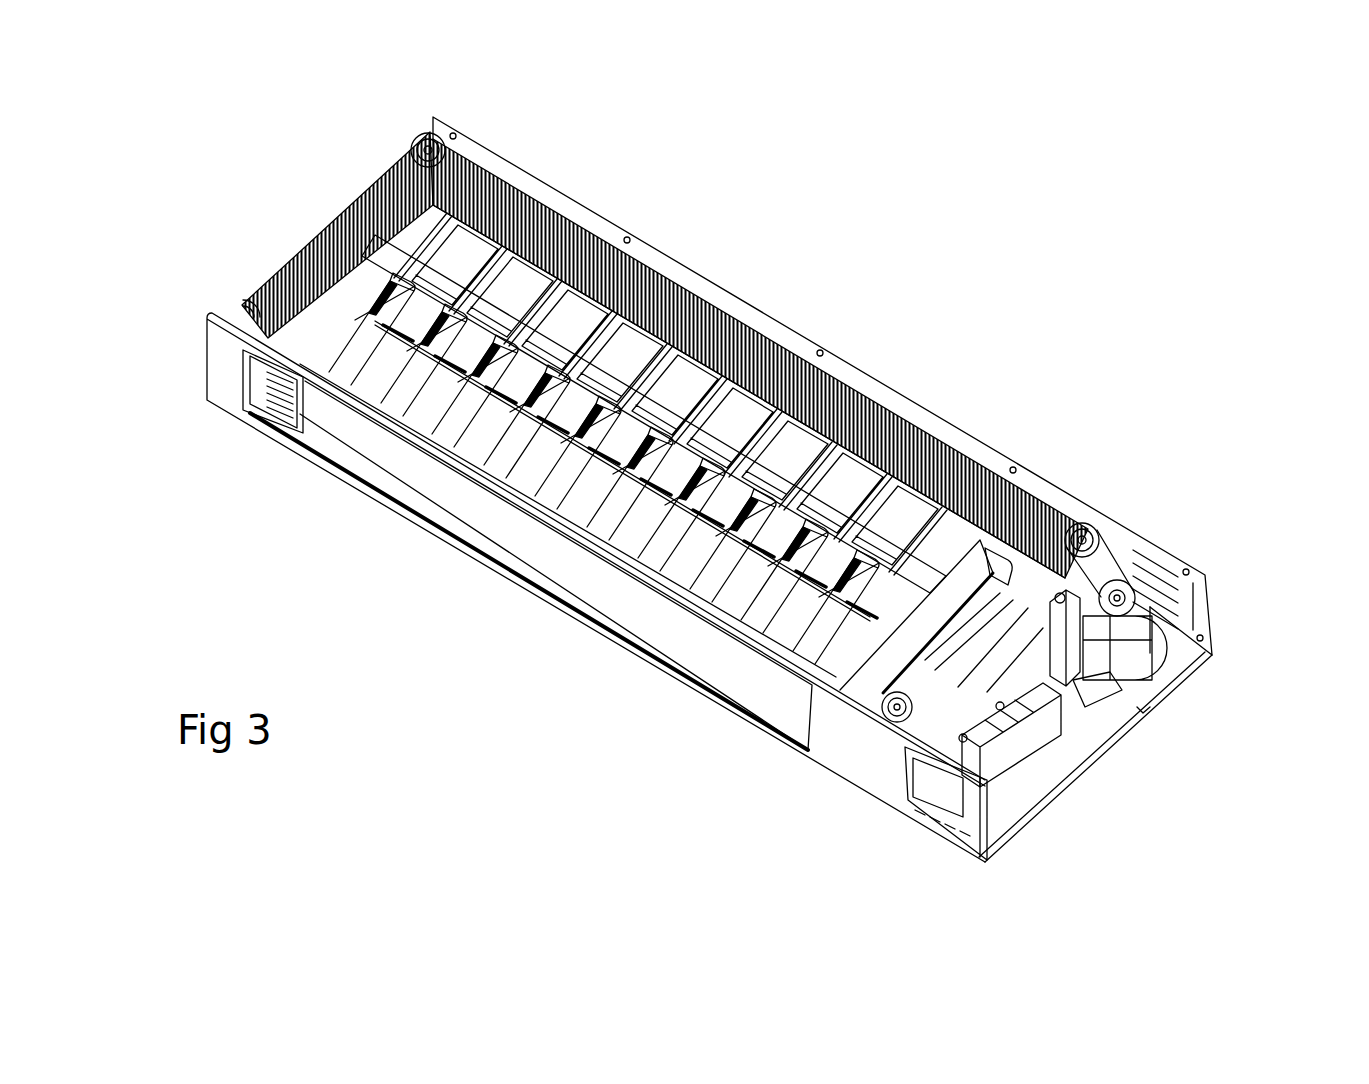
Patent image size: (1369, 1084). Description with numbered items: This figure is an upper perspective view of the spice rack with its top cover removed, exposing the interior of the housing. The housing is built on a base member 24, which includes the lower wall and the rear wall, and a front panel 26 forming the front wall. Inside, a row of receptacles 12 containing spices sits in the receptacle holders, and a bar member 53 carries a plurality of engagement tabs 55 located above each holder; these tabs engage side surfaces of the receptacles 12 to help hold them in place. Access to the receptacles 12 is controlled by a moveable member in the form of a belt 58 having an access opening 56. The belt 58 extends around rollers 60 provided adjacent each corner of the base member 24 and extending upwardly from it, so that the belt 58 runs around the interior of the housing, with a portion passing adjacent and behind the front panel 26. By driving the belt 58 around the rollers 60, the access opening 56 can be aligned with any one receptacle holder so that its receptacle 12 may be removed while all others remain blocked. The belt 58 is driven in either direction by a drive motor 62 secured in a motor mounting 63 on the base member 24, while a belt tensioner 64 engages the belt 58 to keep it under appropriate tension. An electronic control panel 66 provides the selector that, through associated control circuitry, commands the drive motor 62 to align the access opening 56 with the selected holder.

The receptacle 12 is at (623, 520).
The base member 24 is at (1090, 735).
The front panel 26 is at (850, 757).
The bar member 53 is at (627, 240).
The engagement tab 55 is at (412, 318).
The access opening 56 is at (285, 438).
The belt 58 is at (650, 635).
The roller 60 is at (430, 132).
The drive motor 62 is at (1133, 655).
The motor mounting 63 is at (1160, 652).
The belt tensioner 64 is at (1000, 470).
The electronic control panel 66 is at (948, 797).